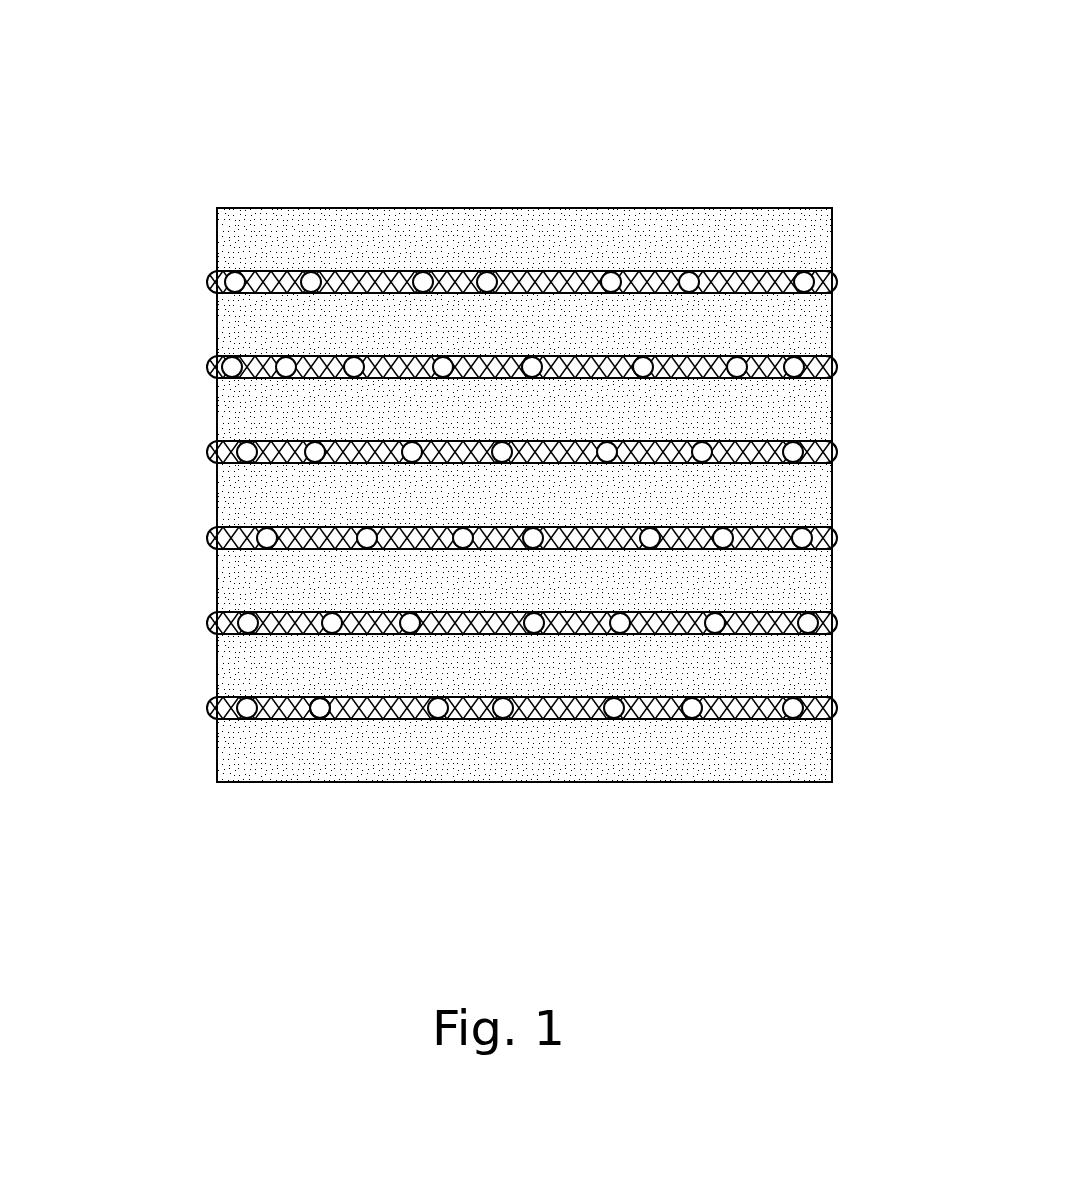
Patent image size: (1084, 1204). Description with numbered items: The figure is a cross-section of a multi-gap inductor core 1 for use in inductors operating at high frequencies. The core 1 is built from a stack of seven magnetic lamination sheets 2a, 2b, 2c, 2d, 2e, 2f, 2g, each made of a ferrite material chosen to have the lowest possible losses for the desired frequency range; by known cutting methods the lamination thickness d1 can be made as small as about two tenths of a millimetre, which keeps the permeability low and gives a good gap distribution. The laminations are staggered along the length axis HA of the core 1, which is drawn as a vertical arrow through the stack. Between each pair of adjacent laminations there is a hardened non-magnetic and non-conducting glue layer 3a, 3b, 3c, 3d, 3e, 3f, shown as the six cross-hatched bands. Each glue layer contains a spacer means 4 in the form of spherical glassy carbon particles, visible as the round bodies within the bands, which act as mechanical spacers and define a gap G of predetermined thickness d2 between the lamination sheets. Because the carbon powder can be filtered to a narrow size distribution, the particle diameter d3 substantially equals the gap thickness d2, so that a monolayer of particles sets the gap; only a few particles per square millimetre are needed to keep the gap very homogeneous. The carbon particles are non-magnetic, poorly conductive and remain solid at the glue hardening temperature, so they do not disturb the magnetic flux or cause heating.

The multi-gap inductor core 1 is at (597, 173).
The magnetic lamination sheet 2a is at (812, 250).
The magnetic lamination sheet 2b is at (812, 335).
The magnetic lamination sheet 2c is at (812, 420).
The magnetic lamination sheet 2d is at (812, 505).
The magnetic lamination sheet 2e is at (812, 590).
The magnetic lamination sheet 2f is at (812, 675).
The magnetic lamination sheet 2g is at (812, 760).
The glue layer 3a is at (836, 283).
The glue layer 3b is at (836, 368).
The glue layer 3c is at (836, 453).
The glue layer 3d is at (836, 539).
The glue layer 3e is at (836, 624).
The glue layer 3f is at (836, 709).
The spacer means 4 is at (487, 282).
The lamination thickness d1 is at (168, 140).
The gap thickness d2 is at (392, 675).
The particle diameter d3 is at (310, 715).
The length axis HA is at (503, 80).